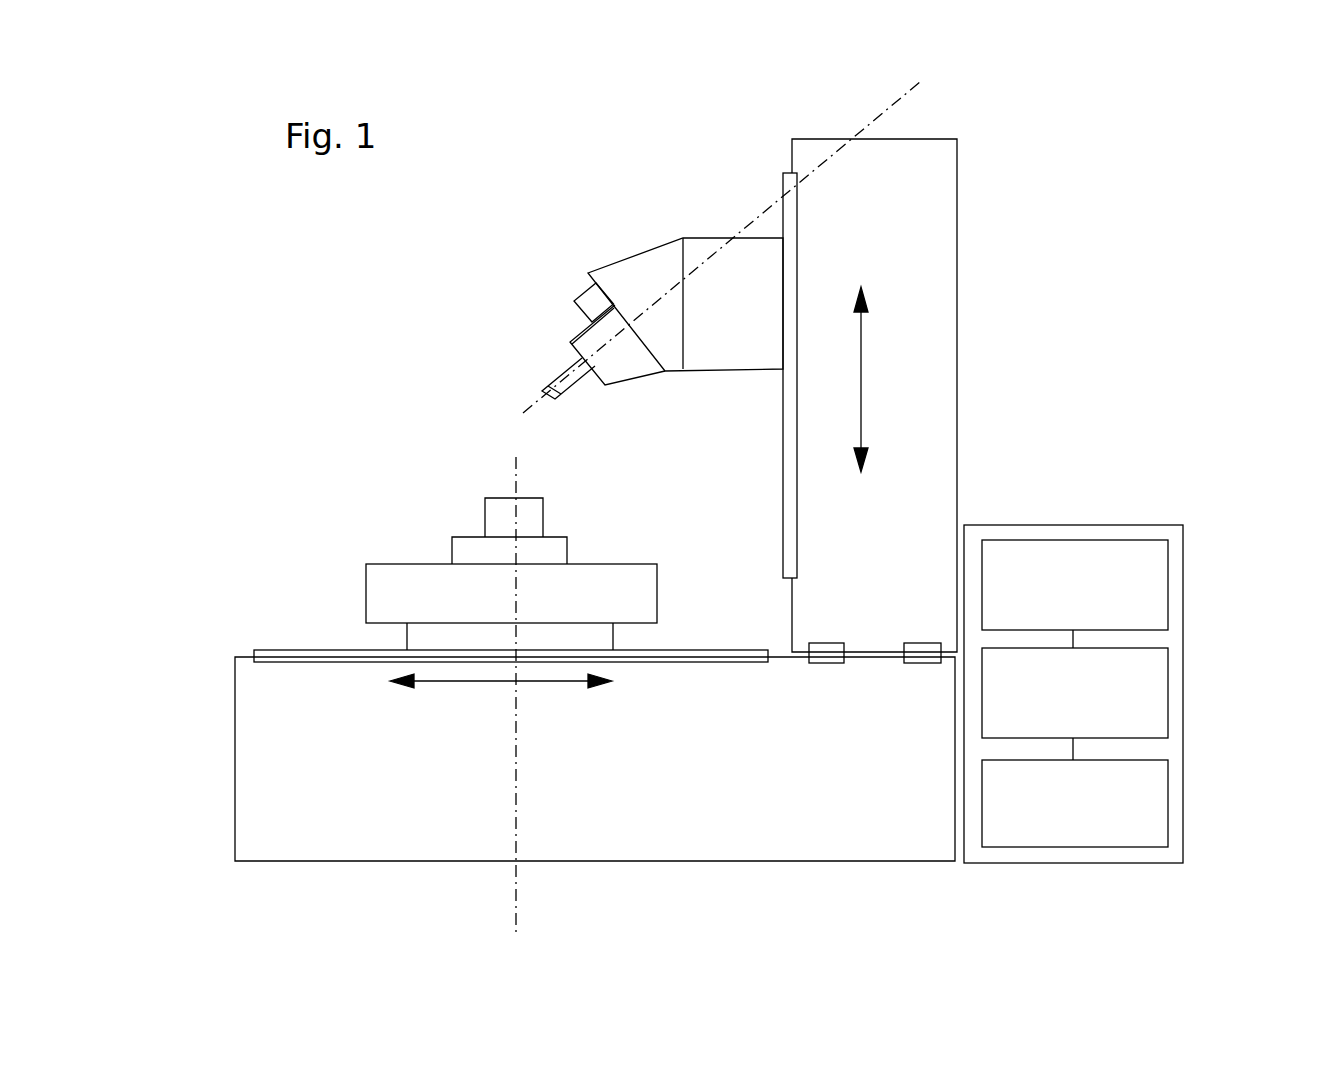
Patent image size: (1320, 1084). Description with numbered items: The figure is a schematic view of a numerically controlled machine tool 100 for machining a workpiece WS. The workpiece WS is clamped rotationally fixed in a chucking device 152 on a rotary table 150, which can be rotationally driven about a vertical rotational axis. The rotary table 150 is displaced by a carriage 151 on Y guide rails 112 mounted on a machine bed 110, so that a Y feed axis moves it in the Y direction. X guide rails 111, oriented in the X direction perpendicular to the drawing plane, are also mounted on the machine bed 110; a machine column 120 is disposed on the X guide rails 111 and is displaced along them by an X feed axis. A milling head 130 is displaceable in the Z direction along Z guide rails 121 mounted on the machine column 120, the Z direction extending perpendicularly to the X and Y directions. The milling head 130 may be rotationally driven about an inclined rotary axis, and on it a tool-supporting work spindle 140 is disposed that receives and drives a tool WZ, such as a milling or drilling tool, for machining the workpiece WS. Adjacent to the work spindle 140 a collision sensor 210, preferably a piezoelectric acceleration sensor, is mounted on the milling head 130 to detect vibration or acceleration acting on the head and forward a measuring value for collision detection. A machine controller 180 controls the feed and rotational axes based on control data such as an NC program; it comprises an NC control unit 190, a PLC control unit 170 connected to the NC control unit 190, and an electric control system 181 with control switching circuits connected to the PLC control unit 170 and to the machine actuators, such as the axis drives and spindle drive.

The numerically controlled machine tool 100 is at (292, 339).
The machine bed 110 is at (253, 729).
The X guide rails 111 is at (826, 643).
The Y guide rails 112 is at (286, 654).
The machine column 120 is at (943, 184).
The Z guide rails 121 is at (777, 207).
The milling head 130 is at (628, 273).
The work spindle 140 is at (600, 336).
The rotary table 150 is at (402, 582).
The carriage 151 is at (540, 635).
The chucking device 152 is at (468, 548).
The PLC control unit 170 is at (1153, 672).
The machine controller 180 is at (1072, 525).
The electric control system 181 is at (1153, 780).
The NC control unit 190 is at (1153, 563).
The collision sensor 210 is at (587, 300).
The tool WZ is at (556, 393).
The workpiece WS is at (527, 513).